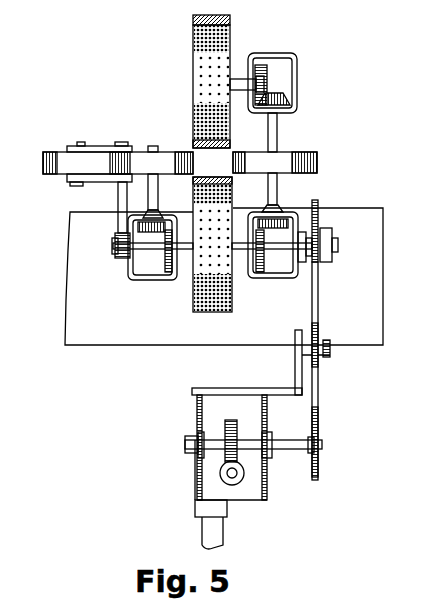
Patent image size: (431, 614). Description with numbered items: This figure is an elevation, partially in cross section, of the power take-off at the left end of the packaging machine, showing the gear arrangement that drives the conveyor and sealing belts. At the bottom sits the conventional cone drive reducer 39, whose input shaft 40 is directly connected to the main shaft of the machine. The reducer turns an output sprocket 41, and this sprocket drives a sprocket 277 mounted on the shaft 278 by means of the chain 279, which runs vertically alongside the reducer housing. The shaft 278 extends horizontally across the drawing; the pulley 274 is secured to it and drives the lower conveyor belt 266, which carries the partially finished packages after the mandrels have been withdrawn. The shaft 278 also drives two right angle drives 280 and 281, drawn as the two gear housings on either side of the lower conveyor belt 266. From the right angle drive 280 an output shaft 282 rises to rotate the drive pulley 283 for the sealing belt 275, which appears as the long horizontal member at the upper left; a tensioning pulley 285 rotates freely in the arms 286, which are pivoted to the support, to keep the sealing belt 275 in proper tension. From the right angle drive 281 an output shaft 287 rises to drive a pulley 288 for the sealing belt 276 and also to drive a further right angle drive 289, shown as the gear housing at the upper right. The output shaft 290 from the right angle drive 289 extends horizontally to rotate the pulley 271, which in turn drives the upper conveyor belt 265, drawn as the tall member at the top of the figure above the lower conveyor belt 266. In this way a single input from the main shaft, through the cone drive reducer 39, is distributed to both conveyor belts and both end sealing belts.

The cone drive reducer 39 is at (267, 490).
The input shaft 40 is at (221, 478).
The output sprocket 41 is at (320, 462).
The upper conveyor belt 265 is at (193, 25).
The lower conveyor belt 266 is at (193, 318).
The pulley 271 is at (193, 47).
The pulley 274 is at (193, 284).
The sealing belt 275 is at (168, 152).
The sealing belt 276 is at (318, 162).
The sprocket 277 is at (316, 210).
The shaft 278 is at (338, 243).
The chain 279 is at (320, 375).
The right angle drive 280 is at (130, 280).
The right angle drive 281 is at (272, 280).
The output shaft 282 is at (193, 208).
The drive pulley 283 is at (152, 163).
The tensioning pulley 285 is at (55, 152).
The arms 286 is at (93, 146).
The output shaft 287 is at (280, 135).
The pulley 288 is at (320, 150).
The right angle drive 289 is at (300, 55).
The output shaft 290 is at (237, 78).